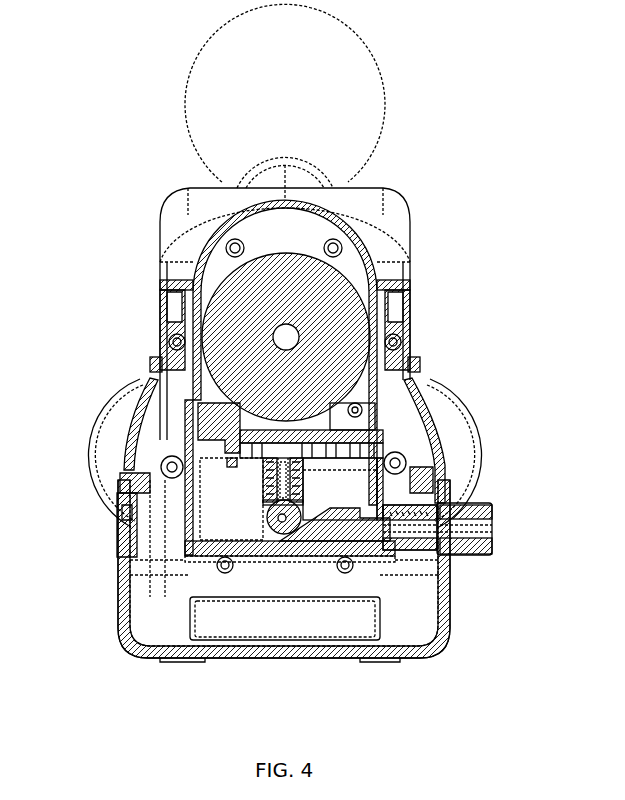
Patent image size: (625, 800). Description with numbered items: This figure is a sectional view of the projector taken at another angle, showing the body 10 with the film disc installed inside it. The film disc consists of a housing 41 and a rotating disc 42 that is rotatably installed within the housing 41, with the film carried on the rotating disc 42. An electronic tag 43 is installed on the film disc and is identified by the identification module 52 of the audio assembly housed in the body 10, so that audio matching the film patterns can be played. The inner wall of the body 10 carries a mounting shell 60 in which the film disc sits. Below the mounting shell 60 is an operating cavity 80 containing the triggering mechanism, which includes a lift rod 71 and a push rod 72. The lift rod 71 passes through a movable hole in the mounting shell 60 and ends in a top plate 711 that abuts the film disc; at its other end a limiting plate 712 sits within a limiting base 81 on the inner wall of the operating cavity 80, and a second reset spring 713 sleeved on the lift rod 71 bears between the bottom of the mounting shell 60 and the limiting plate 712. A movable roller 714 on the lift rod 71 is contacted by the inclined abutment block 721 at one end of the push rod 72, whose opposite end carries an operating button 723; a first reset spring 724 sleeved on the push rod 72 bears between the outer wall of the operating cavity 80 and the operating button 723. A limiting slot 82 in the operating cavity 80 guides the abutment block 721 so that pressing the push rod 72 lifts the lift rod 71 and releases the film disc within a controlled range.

The body 10 is at (390, 190).
The housing 41 is at (355, 237).
The rotating disc 42 is at (345, 297).
The electronic tag 43 is at (225, 423).
The identification module 52 is at (222, 462).
The mounting shell 60 is at (300, 447).
The lift rod 71 is at (305, 458).
The top plate 711 is at (310, 440).
The limiting plate 712 is at (298, 490).
The second reset spring 713 is at (300, 470).
The movable roller 714 is at (300, 510).
The push rod 72 is at (383, 547).
The abutment block 721 is at (327, 533).
The operating button 723 is at (462, 548).
The first reset spring 724 is at (412, 545).
The operating cavity 80 is at (237, 515).
The limiting base 81 is at (265, 490).
The limiting slot 82 is at (232, 548).